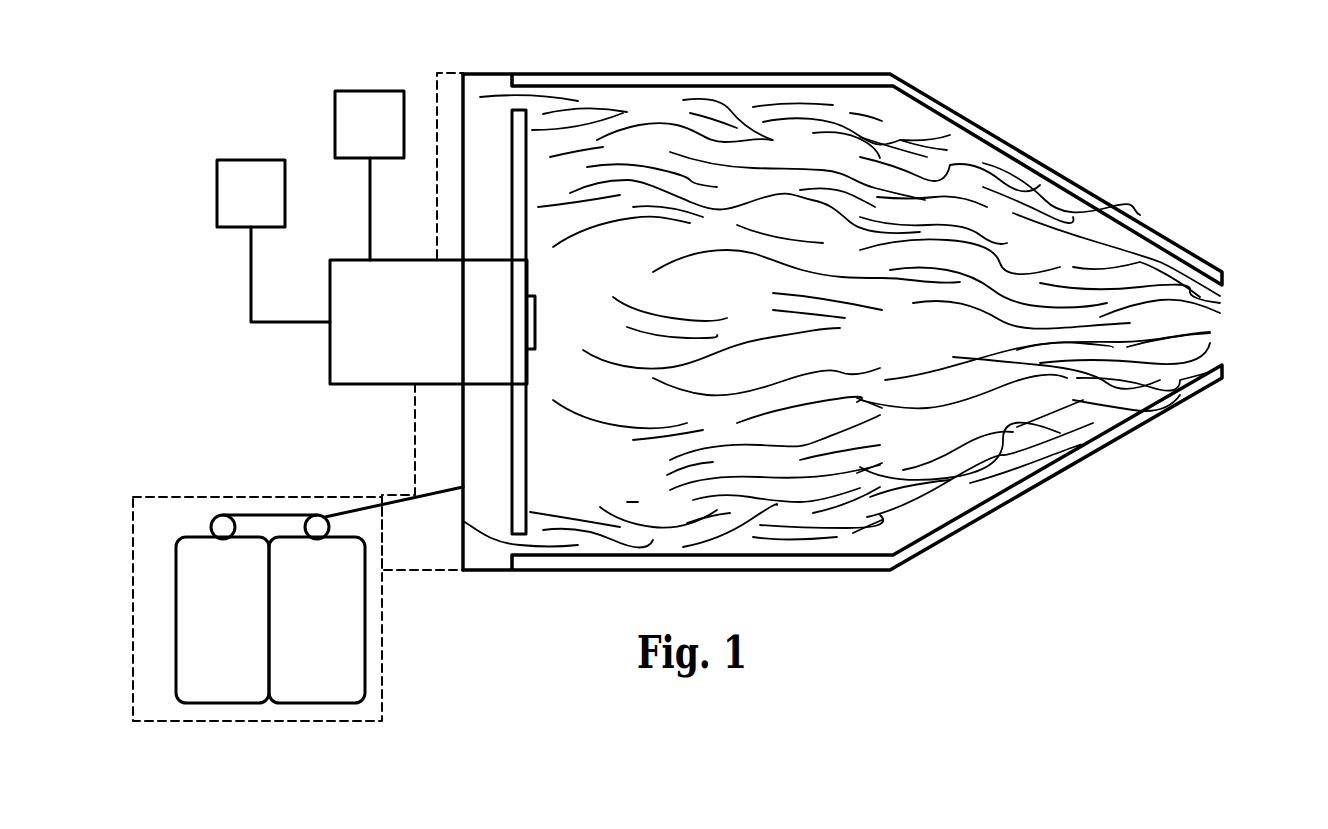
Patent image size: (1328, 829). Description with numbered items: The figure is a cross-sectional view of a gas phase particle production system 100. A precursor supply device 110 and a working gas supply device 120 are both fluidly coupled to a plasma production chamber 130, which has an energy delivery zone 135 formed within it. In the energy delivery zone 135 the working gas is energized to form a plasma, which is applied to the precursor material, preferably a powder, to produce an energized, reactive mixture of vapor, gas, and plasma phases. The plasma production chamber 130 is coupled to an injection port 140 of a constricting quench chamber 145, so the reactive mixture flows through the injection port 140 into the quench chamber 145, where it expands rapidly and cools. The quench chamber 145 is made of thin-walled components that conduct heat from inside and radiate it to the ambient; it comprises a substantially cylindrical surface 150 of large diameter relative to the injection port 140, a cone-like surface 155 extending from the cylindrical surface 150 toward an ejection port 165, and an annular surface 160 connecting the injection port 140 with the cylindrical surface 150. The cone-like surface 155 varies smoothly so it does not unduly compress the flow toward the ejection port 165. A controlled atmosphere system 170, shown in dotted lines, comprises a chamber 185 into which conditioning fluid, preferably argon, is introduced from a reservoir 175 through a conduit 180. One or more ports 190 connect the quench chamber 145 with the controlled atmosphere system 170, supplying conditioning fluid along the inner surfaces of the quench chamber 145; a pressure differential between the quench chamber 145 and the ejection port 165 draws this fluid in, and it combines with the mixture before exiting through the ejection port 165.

The gas phase particle production system 100 is at (1177, 93).
The precursor supply device 110 is at (370, 90).
The working gas supply device 120 is at (250, 159).
The plasma production chamber 130 is at (402, 257).
The energy delivery zone 135 is at (442, 334).
The injection port 140 is at (537, 314).
The constricting quench chamber 145 is at (935, 347).
The substantially cylindrical surface 150 is at (768, 73).
The cone-like surface 155 is at (1010, 499).
The annular surface 160 is at (526, 462).
The ejection port 165 is at (1213, 332).
The controlled atmosphere system 170 is at (195, 485).
The reservoir 175 is at (240, 695).
The conduit 180 is at (394, 497).
The chamber 185 is at (510, 441).
The ports 190 is at (463, 521).